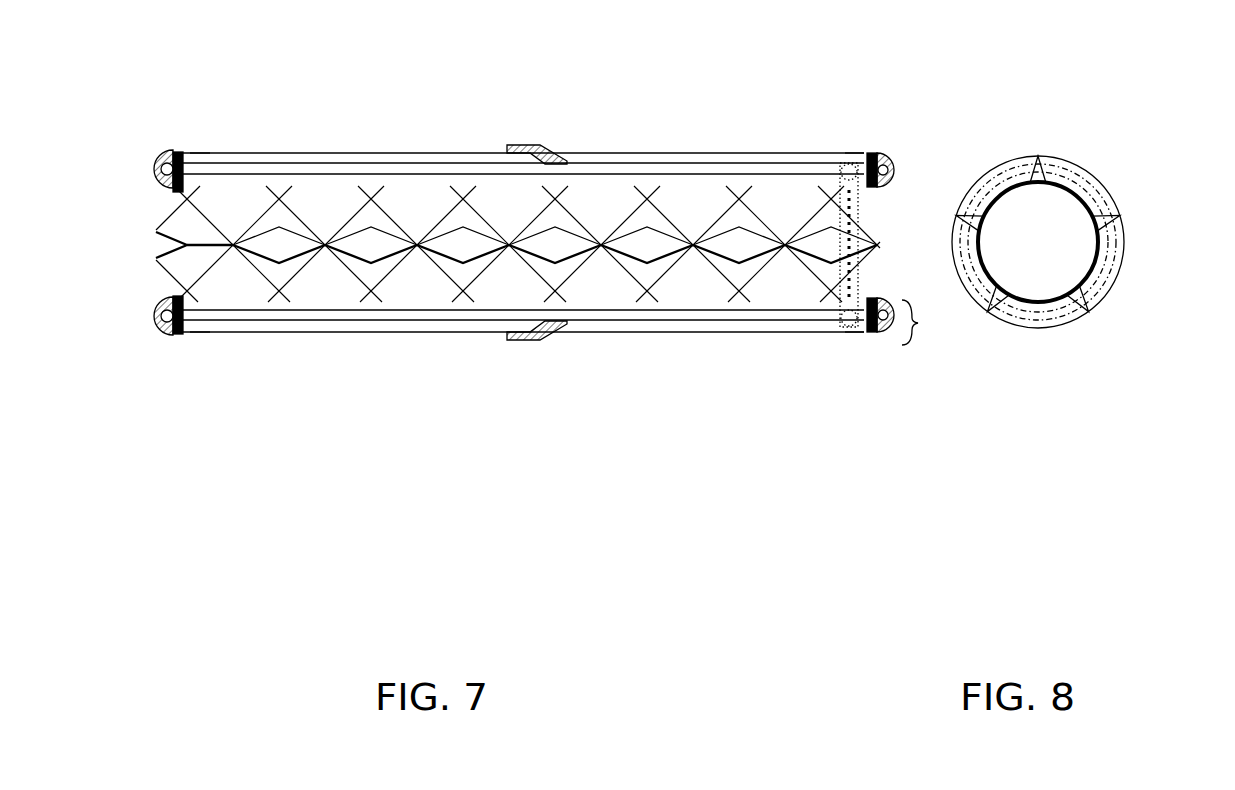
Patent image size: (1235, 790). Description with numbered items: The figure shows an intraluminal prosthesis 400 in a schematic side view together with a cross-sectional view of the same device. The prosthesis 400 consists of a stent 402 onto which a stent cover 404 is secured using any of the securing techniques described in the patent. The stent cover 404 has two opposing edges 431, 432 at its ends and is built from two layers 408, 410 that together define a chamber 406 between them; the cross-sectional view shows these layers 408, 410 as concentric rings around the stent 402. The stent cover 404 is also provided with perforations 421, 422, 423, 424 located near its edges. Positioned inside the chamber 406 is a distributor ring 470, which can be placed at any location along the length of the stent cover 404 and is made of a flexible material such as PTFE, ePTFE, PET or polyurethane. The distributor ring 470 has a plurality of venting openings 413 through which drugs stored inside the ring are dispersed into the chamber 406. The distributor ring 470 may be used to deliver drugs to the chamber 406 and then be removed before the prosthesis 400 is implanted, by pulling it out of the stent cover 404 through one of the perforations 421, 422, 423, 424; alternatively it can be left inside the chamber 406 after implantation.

In FIG. 7, the prosthesis 400 is at (425, 422).
In FIG. 7, the stent 402 is at (612, 262).
In FIG. 8, the stent 402 is at (1092, 210).
In FIG. 7, the stent cover 404 is at (918, 323).
In FIG. 7, the chamber 406 is at (615, 158).
In FIG. 8, the chamber 406 is at (1105, 268).
In FIG. 7, the layer 408 is at (288, 183).
In FIG. 8, the layer 408 is at (1103, 252).
In FIG. 7, the layer 410 is at (343, 157).
In FIG. 8, the layer 410 is at (1105, 296).
In FIG. 7, the venting openings 413 is at (845, 212).
In FIG. 7, the perforation 421 is at (198, 150).
In FIG. 7, the perforation 422 is at (196, 337).
In FIG. 7, the perforation 423 is at (850, 338).
In FIG. 7, the perforation 424 is at (852, 154).
In FIG. 7, the opposing edge 431 is at (150, 172).
In FIG. 7, the opposing edge 432 is at (896, 165).
In FIG. 7, the distributor ring 470 is at (858, 222).